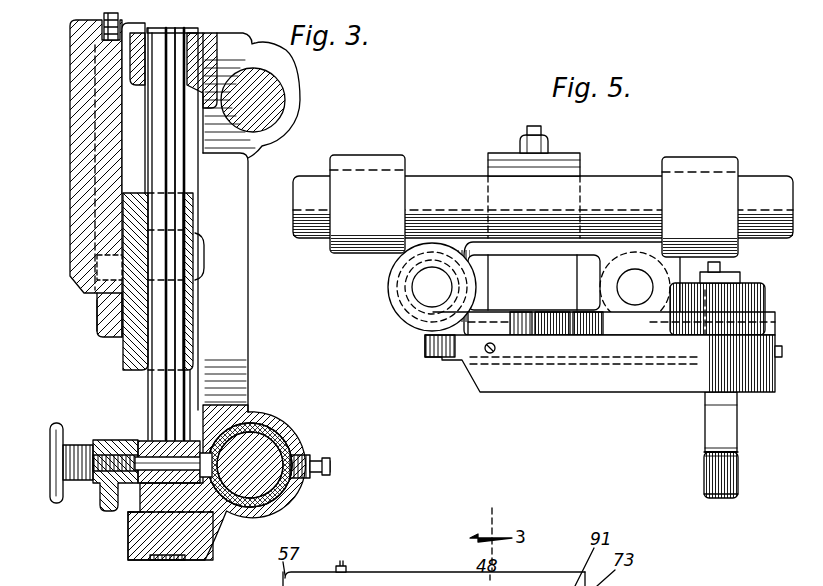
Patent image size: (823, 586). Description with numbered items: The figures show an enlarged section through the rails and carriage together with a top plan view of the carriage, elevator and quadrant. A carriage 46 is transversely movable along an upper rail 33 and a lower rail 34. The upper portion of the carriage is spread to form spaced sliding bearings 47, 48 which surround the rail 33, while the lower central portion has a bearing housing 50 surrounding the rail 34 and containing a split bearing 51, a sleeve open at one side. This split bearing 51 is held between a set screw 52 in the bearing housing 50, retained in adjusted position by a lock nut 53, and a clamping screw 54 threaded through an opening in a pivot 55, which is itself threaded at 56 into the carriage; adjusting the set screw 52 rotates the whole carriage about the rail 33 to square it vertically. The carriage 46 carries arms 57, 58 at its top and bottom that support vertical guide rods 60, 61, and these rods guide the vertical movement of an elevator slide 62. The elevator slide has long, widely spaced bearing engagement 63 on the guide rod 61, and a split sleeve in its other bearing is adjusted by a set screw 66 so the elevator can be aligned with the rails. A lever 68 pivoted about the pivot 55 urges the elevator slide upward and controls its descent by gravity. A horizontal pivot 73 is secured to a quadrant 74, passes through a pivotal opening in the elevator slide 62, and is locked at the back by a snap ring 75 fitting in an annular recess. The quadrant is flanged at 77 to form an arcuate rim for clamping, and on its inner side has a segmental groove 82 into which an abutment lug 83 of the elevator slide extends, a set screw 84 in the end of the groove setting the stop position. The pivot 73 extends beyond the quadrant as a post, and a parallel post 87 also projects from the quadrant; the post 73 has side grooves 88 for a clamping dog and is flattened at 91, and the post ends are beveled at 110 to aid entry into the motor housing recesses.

In FIG. 3, the rail 33 is at (262, 92).
In FIG. 5, the rail 33 is at (618, 178).
In FIG. 3, the rail 34 is at (278, 448).
In FIG. 3, the carriage 46 is at (248, 290).
In FIG. 5, the carriage 46 is at (465, 240).
In FIG. 3, the sliding bearing 47 is at (300, 106).
In FIG. 5, the sliding bearing 47 is at (378, 158).
In FIG. 5, the sliding bearing 48 is at (706, 158).
In FIG. 3, the bearing housing 50 is at (300, 503).
In FIG. 3, the split bearing 51 is at (262, 415).
In FIG. 3, the set screw 52 is at (330, 466).
In FIG. 5, the set screw 52 is at (542, 130).
In FIG. 3, the lock nut 53 is at (308, 458).
In FIG. 5, the lock nut 53 is at (524, 138).
In FIG. 3, the clamping screw 54 is at (100, 500).
In FIG. 3, the pivot 55 is at (128, 440).
In FIG. 3, the threaded portion 56 is at (133, 500).
In FIG. 3, the arm 57 is at (221, 33).
In FIG. 5, the arm 57 is at (445, 316).
In FIG. 3, the arm 58 is at (135, 558).
In FIG. 3, the guide rod 60 is at (158, 424).
In FIG. 5, the guide rod 60 is at (433, 288).
In FIG. 3, the guide rod 61 is at (150, 381).
In FIG. 5, the guide rod 61 is at (635, 287).
In FIG. 3, the elevator slide 62 is at (130, 350).
In FIG. 5, the elevator slide 62 is at (760, 304).
In FIG. 3, the bearing engagement 63 is at (120, 322).
In FIG. 3, the set screw 66 is at (205, 256).
In FIG. 3, the lever 68 is at (108, 440).
In FIG. 5, the pivot 73 is at (722, 270).
In FIG. 3, the quadrant 74 is at (70, 184).
In FIG. 5, the quadrant 74 is at (585, 392).
In FIG. 5, the snap ring 75 is at (742, 280).
In FIG. 3, the flange 77 is at (110, 312).
In FIG. 5, the flange 77 is at (435, 358).
In FIG. 3, the segmental groove 82 is at (98, 295).
In FIG. 5, the abutment lug 83 is at (720, 343).
In FIG. 5, the set screw 84 is at (346, 568).
In FIG. 5, the post 87 is at (705, 480).
In FIG. 5, the grooves 88 is at (737, 426).
In FIG. 5, the flattened side 91 is at (737, 447).
In FIG. 5, the beveled end 110 is at (703, 455).